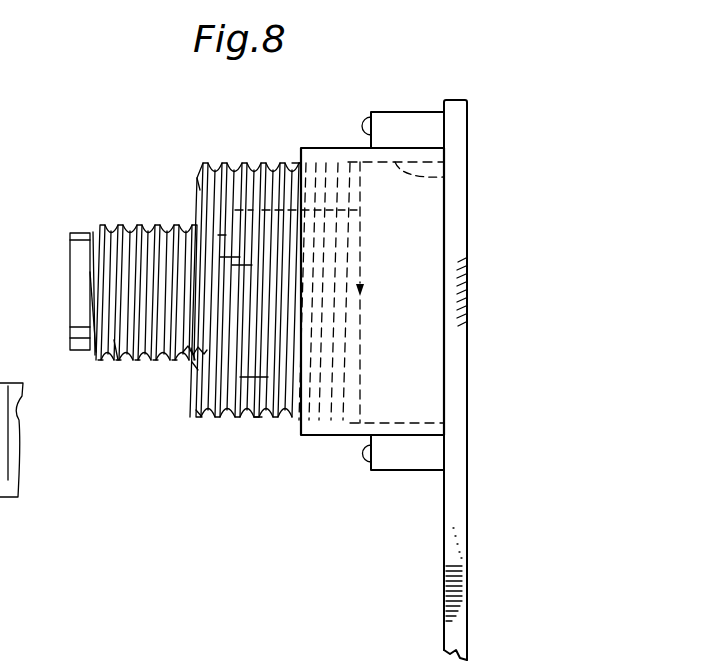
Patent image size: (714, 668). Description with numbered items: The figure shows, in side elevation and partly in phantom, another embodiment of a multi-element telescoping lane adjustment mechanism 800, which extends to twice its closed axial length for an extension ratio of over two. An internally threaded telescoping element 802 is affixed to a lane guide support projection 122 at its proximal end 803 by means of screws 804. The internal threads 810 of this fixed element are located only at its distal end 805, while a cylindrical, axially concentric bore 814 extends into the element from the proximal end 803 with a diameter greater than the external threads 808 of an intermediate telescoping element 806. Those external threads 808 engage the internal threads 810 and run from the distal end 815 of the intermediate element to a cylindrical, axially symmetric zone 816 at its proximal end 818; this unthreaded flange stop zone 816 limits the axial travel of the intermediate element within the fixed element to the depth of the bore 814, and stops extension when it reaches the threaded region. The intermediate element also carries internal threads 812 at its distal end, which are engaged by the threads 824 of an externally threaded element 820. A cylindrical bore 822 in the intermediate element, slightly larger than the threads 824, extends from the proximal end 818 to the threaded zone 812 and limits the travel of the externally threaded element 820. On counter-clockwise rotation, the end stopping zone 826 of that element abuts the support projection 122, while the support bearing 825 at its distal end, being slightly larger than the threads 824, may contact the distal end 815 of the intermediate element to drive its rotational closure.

The lane guide support projection 122 is at (455, 108).
The multi-element telescoping lane adjustment mechanism 800 is at (334, 126).
The internally threaded telescoping element 802 is at (362, 423).
The proximal end 803 is at (438, 227).
The screws 804 is at (364, 122).
The distal end 805 is at (302, 147).
The intermediate telescoping element 806 is at (197, 412).
The external threads 808 is at (257, 420).
The internal threads 810 is at (315, 160).
The internal threads 812 is at (195, 366).
The cylindrical bore 814 is at (441, 178).
The distal end 815 is at (200, 190).
The cylindrical axially symmetric zone 816 is at (365, 294).
The proximal end 818 is at (366, 340).
The externally threaded element 820 is at (96, 362).
The cylindrical bore 822 is at (256, 160).
The threads 824 is at (117, 363).
The support bearing 825 is at (72, 232).
The end stopping zone 826 is at (220, 257).